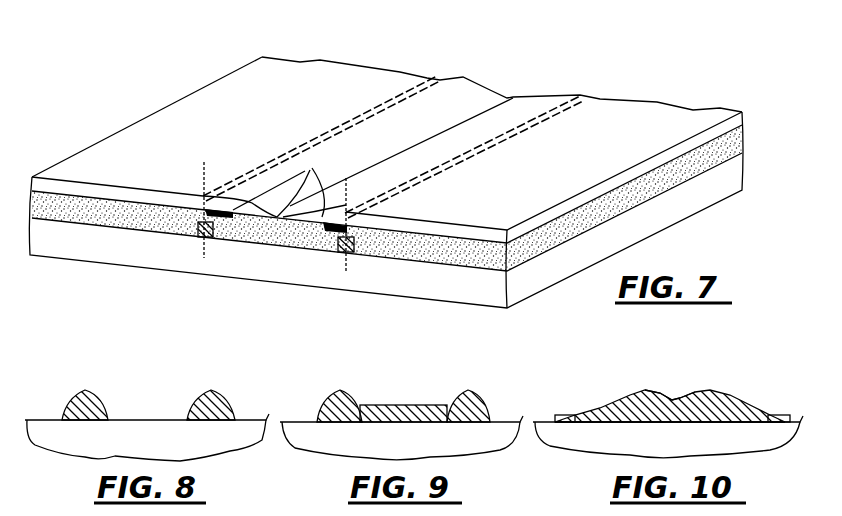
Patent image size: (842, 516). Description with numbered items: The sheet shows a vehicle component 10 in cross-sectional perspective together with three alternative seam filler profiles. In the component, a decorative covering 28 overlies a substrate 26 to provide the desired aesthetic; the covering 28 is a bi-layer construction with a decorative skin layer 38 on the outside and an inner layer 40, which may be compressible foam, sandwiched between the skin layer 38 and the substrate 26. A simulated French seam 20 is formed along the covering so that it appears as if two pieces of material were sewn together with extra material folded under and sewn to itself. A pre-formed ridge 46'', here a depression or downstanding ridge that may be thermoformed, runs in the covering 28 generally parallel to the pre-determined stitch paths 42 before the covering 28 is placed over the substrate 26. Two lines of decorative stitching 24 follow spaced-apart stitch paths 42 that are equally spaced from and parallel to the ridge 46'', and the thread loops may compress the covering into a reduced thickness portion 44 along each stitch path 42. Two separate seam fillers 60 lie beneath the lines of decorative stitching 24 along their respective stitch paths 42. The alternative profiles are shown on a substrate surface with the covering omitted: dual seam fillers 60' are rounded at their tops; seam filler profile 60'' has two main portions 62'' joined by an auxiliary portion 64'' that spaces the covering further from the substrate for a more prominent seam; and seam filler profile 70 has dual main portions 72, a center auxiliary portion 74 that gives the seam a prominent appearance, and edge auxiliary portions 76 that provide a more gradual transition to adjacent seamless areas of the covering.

In FIG. 7, the vehicle component 10 is at (170, 76).
In FIG. 7, the simulated French seam 20 is at (542, 68).
In FIG. 7, the lines of decorative stitching 24 is at (437, 77).
In FIG. 7, the substrate 26 is at (68, 242).
In FIG. 7, the decorative covering 28 is at (115, 148).
In FIG. 7, the decorative skin layer 38 is at (742, 124).
In FIG. 7, the inner layer 40 is at (740, 148).
In FIG. 7, the stitch path 42 is at (203, 181).
In FIG. 7, the reduced thickness portion 44 is at (310, 186).
In FIG. 7, the pre-formed ridge 46'' is at (380, 109).
In FIG. 7, the seam fillers 60 is at (244, 276).
In FIG. 8, the dual seam fillers 60' is at (148, 394).
In FIG. 9, the seam filler profile 60'' is at (326, 396).
In FIG. 9, the main portions 62'' is at (417, 392).
In FIG. 9, the auxiliary portion 64'' is at (365, 446).
In FIG. 10, the seam filler profile 70 is at (605, 409).
In FIG. 10, the main portions 72 is at (690, 398).
In FIG. 10, the center auxiliary portion 74 is at (670, 413).
In FIG. 10, the edge auxiliary portions 76 is at (562, 416).